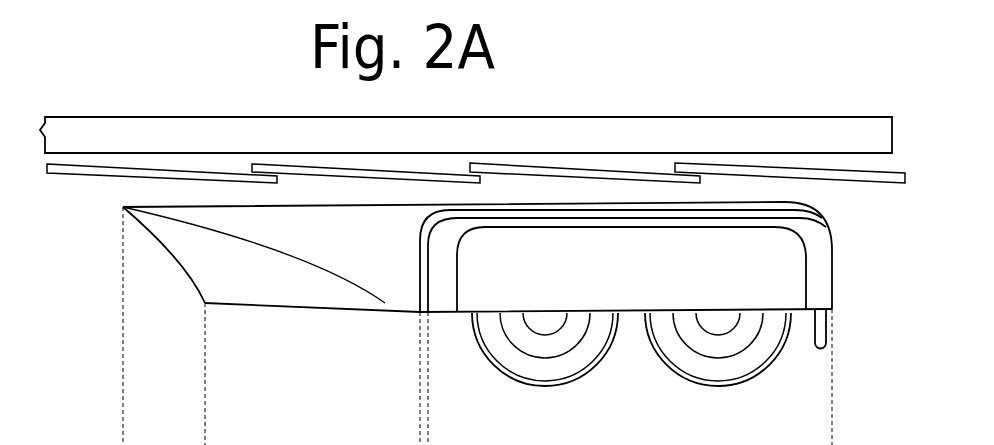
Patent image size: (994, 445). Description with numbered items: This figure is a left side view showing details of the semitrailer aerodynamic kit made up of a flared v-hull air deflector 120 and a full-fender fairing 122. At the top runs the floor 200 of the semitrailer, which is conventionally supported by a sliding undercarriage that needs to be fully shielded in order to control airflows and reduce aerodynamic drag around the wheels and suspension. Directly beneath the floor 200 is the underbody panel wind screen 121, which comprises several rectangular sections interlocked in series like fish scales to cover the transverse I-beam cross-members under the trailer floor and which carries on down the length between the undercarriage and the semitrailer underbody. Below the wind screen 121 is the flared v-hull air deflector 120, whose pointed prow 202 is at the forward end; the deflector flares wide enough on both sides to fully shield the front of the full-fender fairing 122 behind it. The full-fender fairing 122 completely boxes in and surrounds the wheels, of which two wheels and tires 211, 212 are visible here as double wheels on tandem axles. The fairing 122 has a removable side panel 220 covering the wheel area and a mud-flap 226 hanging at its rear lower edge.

The floor 200 is at (470, 141).
The wind screen 121 is at (56, 181).
The flared v-hull air deflector 120 is at (178, 268).
The pointed prow 202 is at (256, 280).
The full-fender fairing 122 is at (456, 279).
The removable side panel 220 is at (656, 268).
The wheel and tire 211 is at (512, 362).
The wheel and tire 212 is at (688, 365).
The mud-flap 226 is at (812, 340).